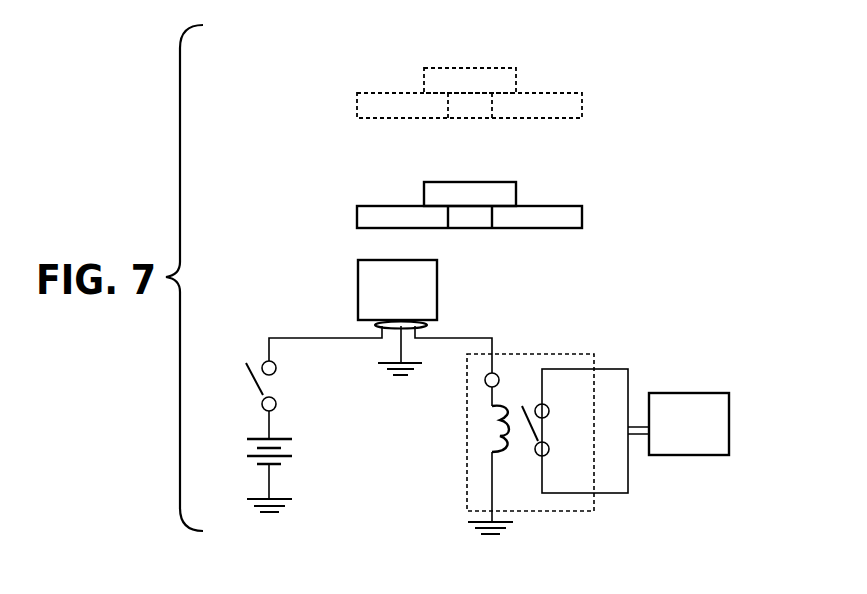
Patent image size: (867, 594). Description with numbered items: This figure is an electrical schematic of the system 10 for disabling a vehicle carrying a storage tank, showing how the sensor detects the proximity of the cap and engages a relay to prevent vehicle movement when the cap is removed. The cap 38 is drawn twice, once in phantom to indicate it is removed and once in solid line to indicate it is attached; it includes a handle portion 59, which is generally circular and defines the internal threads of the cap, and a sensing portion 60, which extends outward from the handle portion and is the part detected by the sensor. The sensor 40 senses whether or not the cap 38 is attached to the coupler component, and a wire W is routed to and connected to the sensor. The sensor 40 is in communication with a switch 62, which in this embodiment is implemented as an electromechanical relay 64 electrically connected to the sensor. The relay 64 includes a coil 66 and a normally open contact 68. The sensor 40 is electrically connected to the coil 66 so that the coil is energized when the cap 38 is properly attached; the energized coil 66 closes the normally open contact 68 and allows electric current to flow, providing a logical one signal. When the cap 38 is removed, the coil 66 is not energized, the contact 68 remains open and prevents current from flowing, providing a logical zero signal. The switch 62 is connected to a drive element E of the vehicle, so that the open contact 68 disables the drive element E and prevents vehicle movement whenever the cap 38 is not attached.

The system 10 is at (728, 216).
The cap 38 is at (592, 106).
The sensor 40 is at (437, 291).
The handle portion 59 is at (476, 68).
The sensing portion 60 is at (380, 93).
The switch 62 is at (594, 526).
The electromechanical relay 64 is at (594, 512).
The coil 66 is at (494, 452).
The normally open contact 68 is at (550, 411).
The wire W is at (375, 325).
The drive element E is at (676, 393).